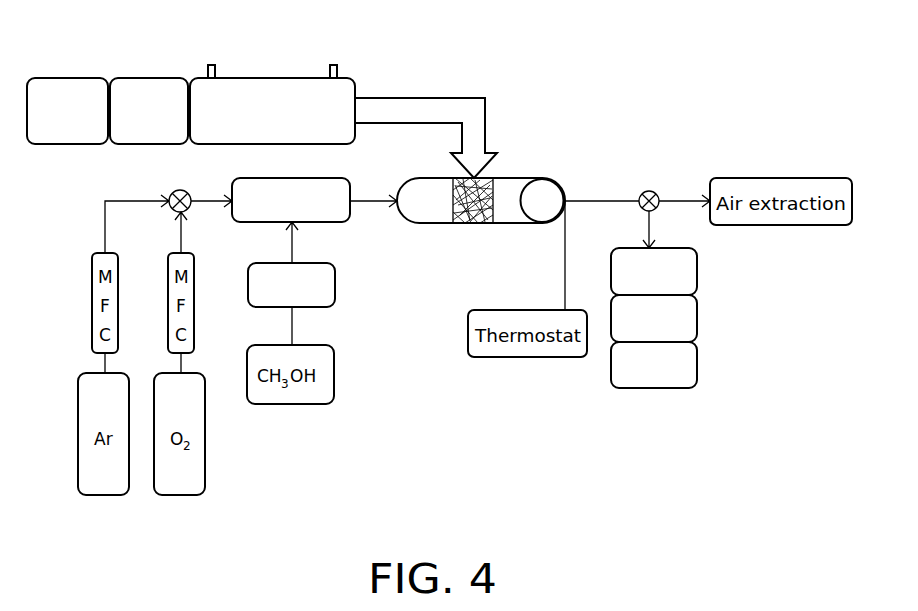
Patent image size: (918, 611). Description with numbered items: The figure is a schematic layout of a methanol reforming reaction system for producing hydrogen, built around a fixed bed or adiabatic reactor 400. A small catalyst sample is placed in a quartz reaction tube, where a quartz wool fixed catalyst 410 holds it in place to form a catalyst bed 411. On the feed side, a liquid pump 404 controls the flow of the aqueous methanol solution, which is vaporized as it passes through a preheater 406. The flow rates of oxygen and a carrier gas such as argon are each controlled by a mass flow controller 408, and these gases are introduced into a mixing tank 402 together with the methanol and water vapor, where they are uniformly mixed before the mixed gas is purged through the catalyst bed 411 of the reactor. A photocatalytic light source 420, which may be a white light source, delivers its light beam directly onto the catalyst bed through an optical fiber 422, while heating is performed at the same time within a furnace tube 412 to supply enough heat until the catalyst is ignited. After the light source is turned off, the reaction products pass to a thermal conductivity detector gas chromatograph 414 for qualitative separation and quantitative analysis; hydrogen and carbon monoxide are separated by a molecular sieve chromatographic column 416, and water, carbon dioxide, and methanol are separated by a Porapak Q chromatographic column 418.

The adiabatic reactor 400 is at (586, 68).
The mixing tank 402 is at (513, 190).
The liquid pump 404 is at (336, 285).
The preheater 406 is at (330, 223).
The mass flow controller 408 is at (176, 190).
The quartz wool fixed catalyst 410 is at (509, 194).
The catalyst bed 411 is at (493, 228).
The furnace tube 412 is at (549, 190).
The thermal conductivity detector (TCD)-gas chromatograph 414 is at (700, 272).
The molecular sieve 5A chromatographic column 416 is at (700, 318).
The Porapak Q chromatographic column 418 is at (700, 365).
The photocatalytic light source 420 is at (355, 54).
The optical fiber 422 is at (447, 97).